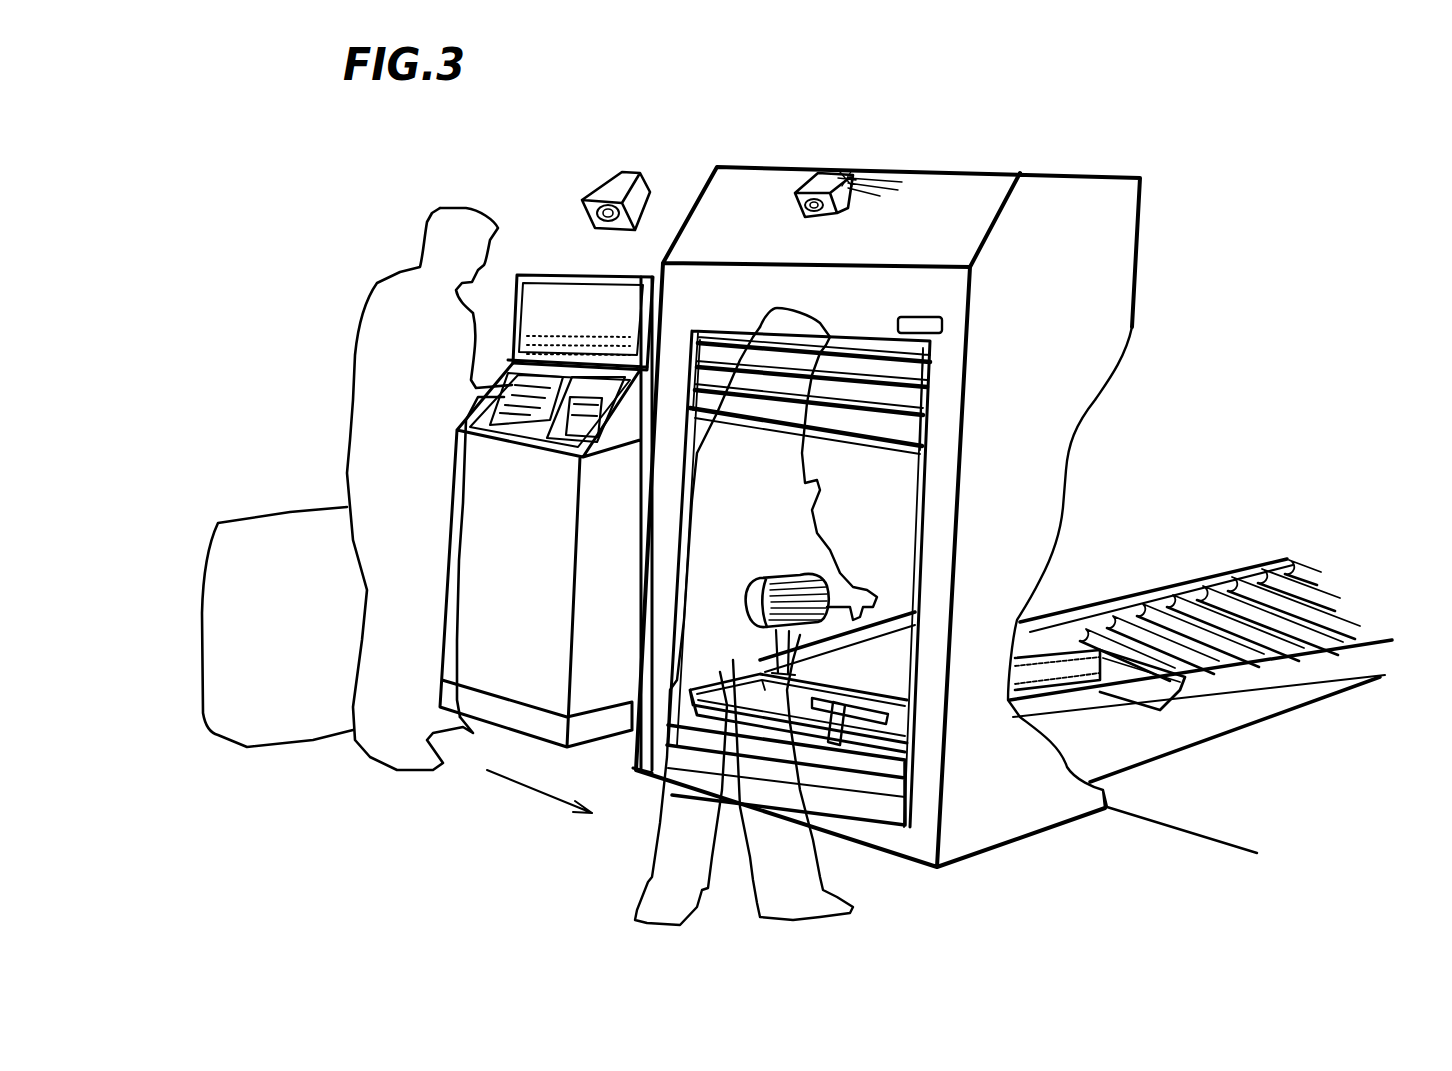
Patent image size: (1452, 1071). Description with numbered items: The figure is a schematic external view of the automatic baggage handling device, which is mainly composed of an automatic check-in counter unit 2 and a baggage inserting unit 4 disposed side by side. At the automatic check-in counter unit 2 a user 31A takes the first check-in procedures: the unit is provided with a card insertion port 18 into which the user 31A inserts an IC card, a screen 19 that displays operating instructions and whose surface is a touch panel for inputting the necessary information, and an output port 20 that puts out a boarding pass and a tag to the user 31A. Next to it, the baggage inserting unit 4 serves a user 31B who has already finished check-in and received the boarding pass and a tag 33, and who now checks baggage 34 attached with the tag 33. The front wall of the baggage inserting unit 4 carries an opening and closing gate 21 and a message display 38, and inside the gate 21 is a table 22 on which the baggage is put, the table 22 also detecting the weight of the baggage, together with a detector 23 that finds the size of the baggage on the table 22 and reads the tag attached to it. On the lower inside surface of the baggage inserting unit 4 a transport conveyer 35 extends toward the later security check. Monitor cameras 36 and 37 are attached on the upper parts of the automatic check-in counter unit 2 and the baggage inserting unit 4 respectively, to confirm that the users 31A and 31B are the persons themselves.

The automatic check-in counter unit 2 is at (538, 237).
The baggage inserting unit 4 is at (1050, 160).
The card insertion port 18 is at (600, 412).
The screen 19 is at (517, 385).
The output port 20 is at (565, 428).
The opening and closing gate 21 is at (917, 400).
The table 22 is at (1105, 715).
The detector 23 is at (767, 580).
The user 31A is at (440, 208).
The user 31B is at (817, 480).
The tag 33 is at (837, 703).
The baggage 34 is at (298, 574).
The transport conveyer 35 is at (1262, 660).
The monitor camera 36 is at (593, 193).
The monitor camera 37 is at (830, 177).
The message display 38 is at (943, 327).